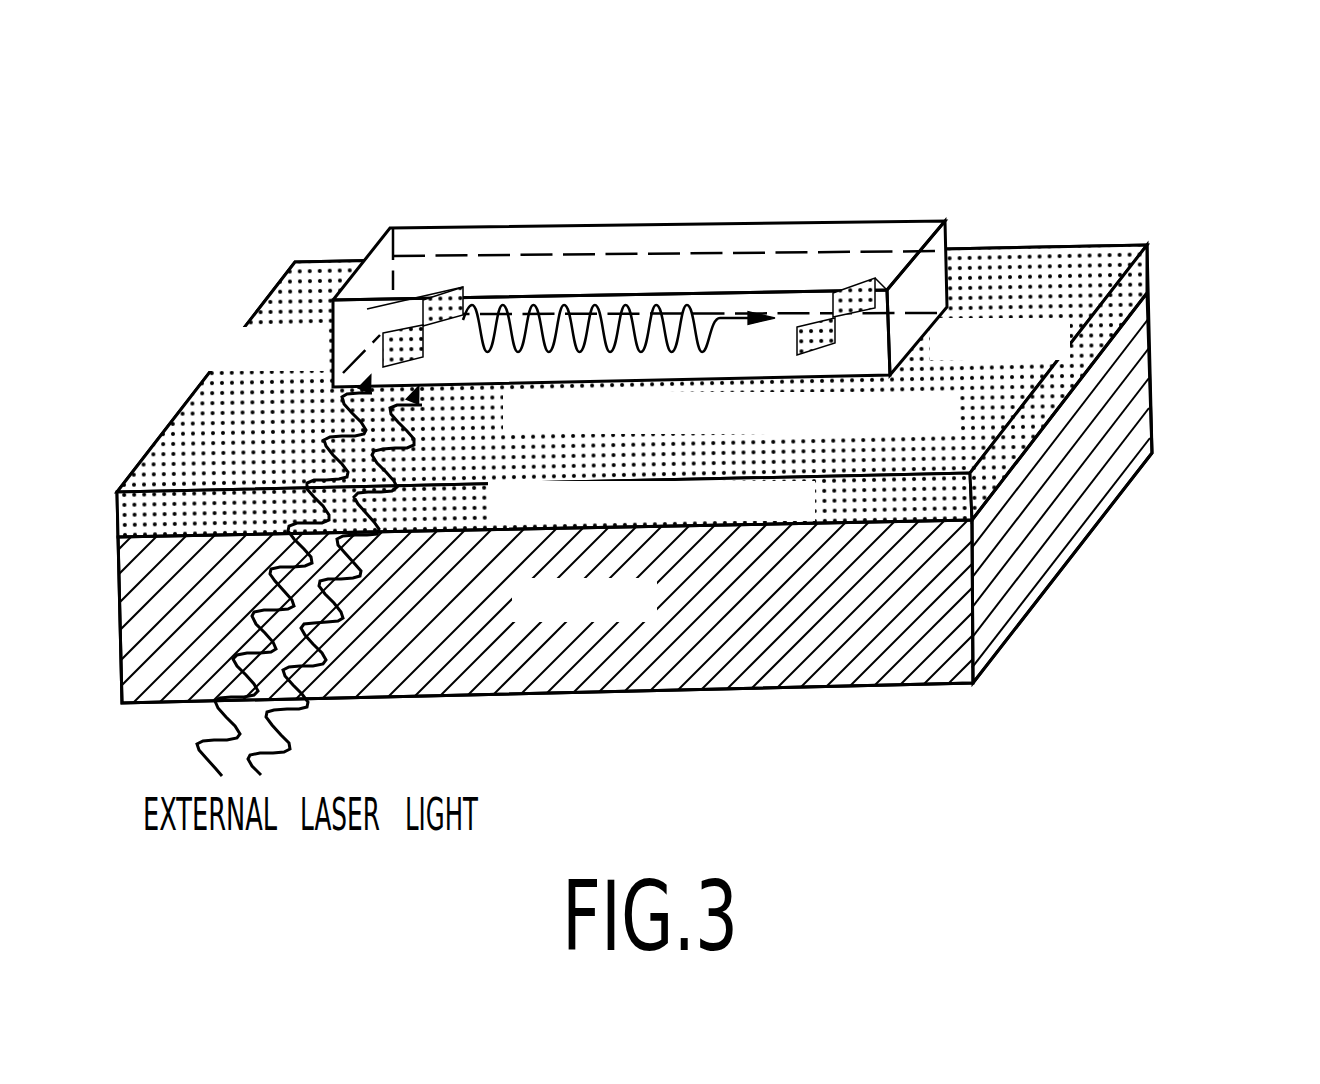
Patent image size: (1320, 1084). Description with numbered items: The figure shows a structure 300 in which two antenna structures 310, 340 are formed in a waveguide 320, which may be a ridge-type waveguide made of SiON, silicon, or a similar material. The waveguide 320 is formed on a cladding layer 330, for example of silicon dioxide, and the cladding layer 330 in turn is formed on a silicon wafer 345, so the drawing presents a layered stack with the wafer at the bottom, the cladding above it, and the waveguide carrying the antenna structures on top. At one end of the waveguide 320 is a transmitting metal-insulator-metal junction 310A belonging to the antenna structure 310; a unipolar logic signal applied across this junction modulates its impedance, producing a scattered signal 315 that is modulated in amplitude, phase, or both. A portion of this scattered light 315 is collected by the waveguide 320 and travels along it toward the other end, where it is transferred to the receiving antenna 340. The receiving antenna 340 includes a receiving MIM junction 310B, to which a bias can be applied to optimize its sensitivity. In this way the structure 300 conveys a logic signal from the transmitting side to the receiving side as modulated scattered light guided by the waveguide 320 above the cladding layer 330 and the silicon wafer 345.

The structure 300 is at (1293, 536).
The antenna structure 310 is at (443, 290).
The transmitting metal-insulator-metal (MIM) junction 310A is at (383, 322).
The receiving MIM junction 310B is at (833, 317).
The scattered signal 315 is at (484, 348).
The waveguide 320 is at (583, 223).
The cladding layer 330 is at (1150, 268).
The receiving antenna 340 is at (860, 287).
The silicon wafer 345 is at (707, 642).